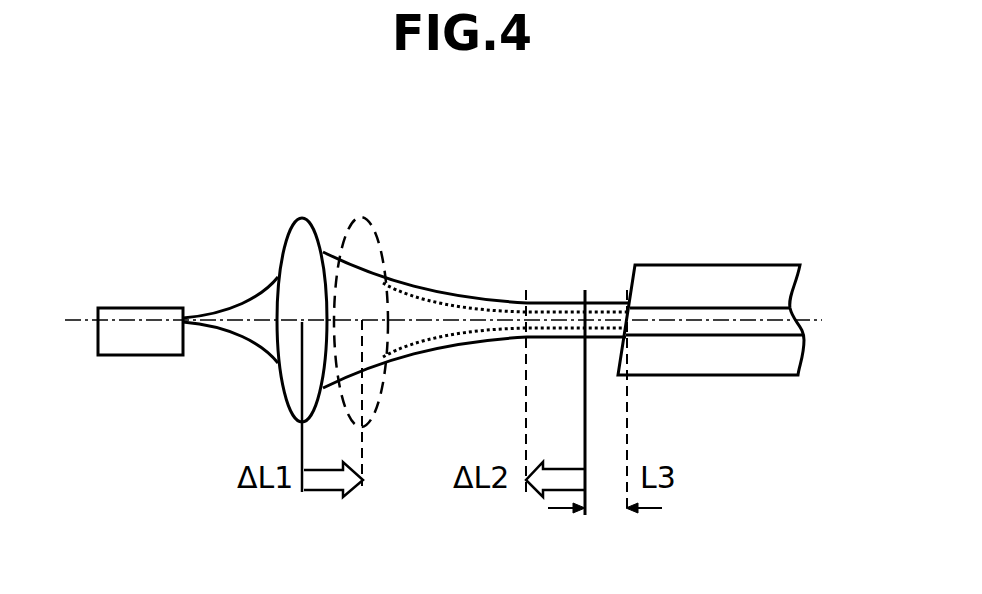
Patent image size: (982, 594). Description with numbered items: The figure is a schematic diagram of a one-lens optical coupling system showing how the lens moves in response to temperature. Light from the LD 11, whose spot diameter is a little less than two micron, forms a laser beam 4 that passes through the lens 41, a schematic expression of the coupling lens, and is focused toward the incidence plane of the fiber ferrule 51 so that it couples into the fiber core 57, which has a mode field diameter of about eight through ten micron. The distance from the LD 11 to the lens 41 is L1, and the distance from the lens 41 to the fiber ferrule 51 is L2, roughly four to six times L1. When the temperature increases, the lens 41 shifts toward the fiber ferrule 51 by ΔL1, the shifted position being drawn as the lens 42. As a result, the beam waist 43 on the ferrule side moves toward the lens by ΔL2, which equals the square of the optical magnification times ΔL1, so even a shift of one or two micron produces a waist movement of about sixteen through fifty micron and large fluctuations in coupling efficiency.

The LD 11 is at (120, 307).
The light beam 4 is at (249, 290).
The lens 41 is at (302, 218).
The lens 42 is at (371, 222).
The beam waist 43 is at (586, 290).
The fiber ferrule 51 is at (670, 265).
The fiber core 57 is at (748, 308).